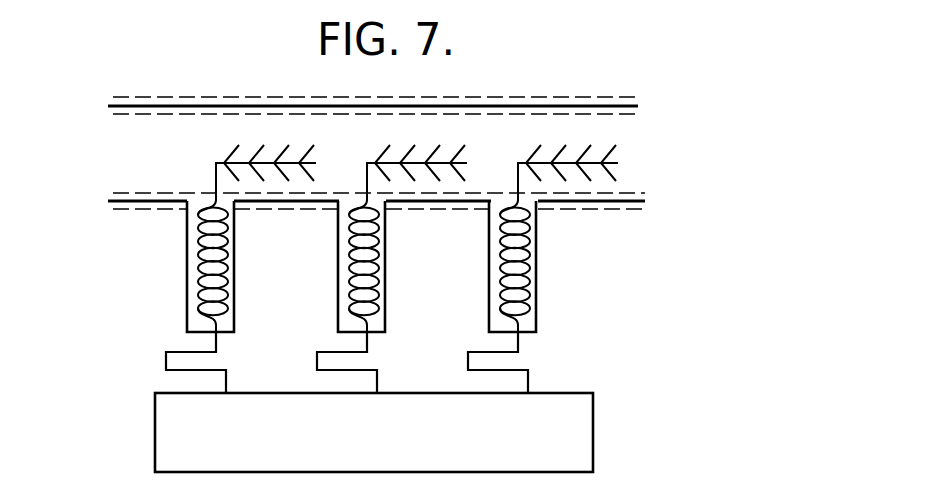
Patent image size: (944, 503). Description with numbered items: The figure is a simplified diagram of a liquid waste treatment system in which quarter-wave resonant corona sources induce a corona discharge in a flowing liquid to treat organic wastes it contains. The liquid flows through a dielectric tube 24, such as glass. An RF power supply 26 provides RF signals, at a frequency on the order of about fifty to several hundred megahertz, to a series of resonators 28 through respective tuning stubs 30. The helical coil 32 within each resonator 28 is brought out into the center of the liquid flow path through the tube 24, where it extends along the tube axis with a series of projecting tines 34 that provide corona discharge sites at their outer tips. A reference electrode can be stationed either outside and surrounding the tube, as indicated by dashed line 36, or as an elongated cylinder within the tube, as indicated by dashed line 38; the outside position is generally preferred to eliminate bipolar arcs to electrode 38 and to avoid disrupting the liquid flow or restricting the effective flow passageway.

The dielectric tube 24 is at (112, 106).
The reference electrode outside the tube 36 is at (511, 98).
The reference electrode within the tube 38 is at (590, 117).
The projecting tines 34 is at (228, 156).
The resonator 28 is at (176, 283).
The helical coil 32 is at (213, 267).
The tuning stub 30 is at (165, 360).
The RF power supply 26 is at (172, 427).